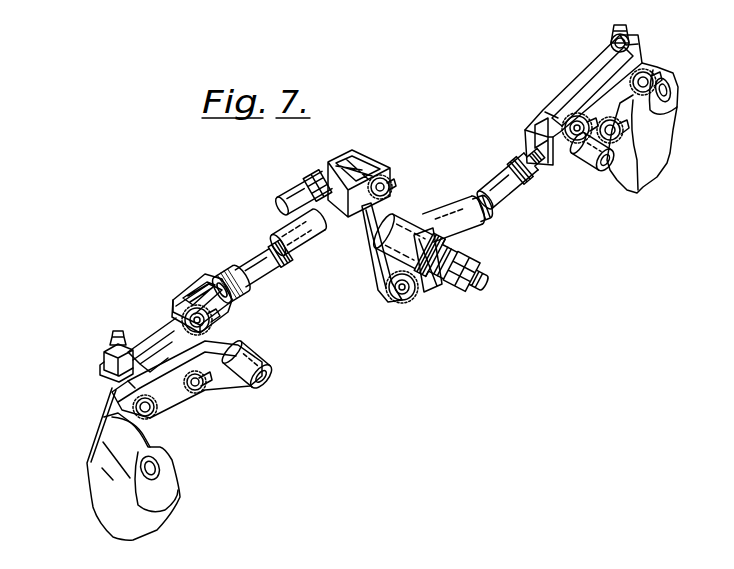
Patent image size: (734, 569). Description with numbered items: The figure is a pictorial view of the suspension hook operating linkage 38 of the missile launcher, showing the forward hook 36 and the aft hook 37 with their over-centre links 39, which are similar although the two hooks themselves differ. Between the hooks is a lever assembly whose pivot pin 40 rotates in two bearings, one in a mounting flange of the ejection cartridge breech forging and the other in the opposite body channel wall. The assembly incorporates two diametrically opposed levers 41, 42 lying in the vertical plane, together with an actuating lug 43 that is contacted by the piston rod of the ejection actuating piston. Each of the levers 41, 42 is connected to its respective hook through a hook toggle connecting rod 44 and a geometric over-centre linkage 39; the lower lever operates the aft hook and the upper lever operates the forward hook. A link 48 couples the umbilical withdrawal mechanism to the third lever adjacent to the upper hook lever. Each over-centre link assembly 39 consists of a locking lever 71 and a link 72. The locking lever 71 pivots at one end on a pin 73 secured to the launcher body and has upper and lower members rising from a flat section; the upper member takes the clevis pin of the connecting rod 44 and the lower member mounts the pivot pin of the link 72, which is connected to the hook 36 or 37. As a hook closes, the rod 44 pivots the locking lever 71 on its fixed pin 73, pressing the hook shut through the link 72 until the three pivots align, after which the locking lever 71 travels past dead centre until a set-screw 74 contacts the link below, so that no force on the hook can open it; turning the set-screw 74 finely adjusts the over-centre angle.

The forward hook 36 is at (96, 510).
The aft hook 37 is at (655, 157).
The linkage 38 is at (468, 175).
The over-centre link assembly 39 is at (167, 298).
The pivot pin 40 is at (437, 282).
The lever 41 is at (395, 198).
The lever 42 is at (388, 264).
The actuating lug 43 is at (424, 292).
The hook toggle connecting rod 44 is at (278, 257).
The link 48 is at (290, 193).
The locking lever 71 is at (167, 327).
The link 72 is at (177, 397).
The pin 73 is at (257, 372).
The set-screw 74 is at (115, 350).